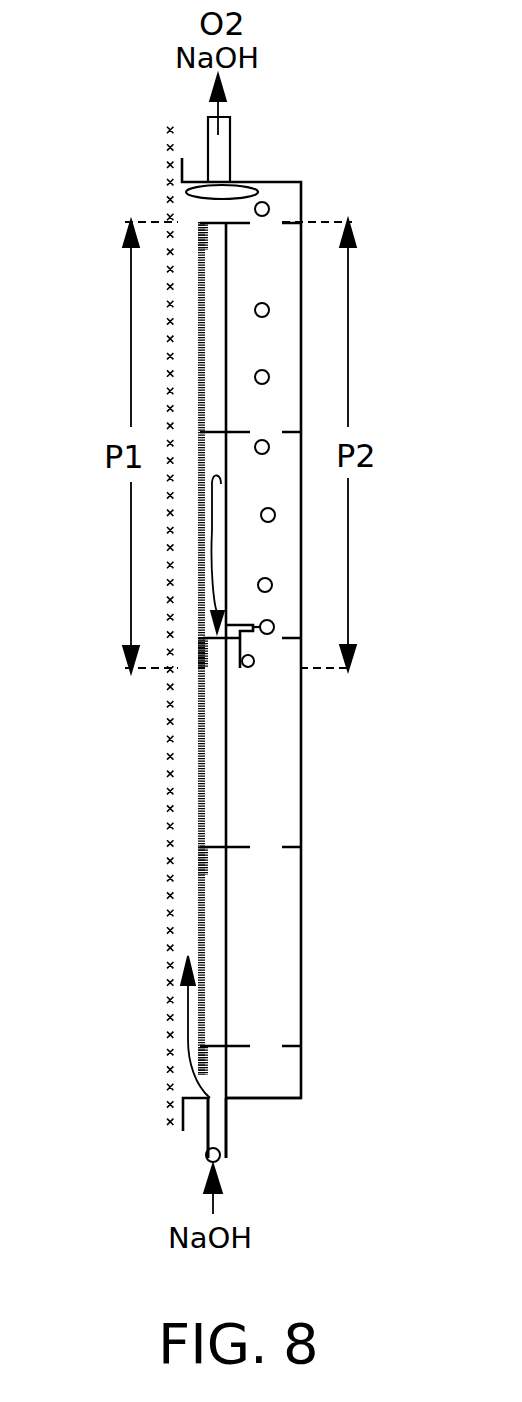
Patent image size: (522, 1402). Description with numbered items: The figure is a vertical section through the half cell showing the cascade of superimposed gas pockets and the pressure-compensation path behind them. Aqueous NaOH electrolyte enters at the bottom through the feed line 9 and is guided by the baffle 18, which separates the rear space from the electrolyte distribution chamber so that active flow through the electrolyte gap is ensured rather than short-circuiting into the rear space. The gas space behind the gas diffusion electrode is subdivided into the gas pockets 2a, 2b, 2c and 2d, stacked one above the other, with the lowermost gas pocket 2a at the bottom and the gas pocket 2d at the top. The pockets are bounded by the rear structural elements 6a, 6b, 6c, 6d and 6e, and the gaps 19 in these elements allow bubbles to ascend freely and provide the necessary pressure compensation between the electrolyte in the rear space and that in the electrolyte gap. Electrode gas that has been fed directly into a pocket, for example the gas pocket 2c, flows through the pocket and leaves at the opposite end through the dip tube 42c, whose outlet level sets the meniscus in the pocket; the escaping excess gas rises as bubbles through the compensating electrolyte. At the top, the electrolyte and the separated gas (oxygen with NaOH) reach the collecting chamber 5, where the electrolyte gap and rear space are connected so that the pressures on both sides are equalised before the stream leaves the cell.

The collecting chamber 5 is at (275, 192).
The rear structural element 6e is at (293, 220).
The rear structural element 6d is at (300, 432).
The rear structural element 6c is at (282, 638).
The rear structural element 6b is at (243, 847).
The rear structural element 6a is at (250, 1046).
The gas pocket 2d is at (213, 343).
The gas pocket 2c is at (218, 533).
The gas pocket 2b is at (215, 750).
The gas pocket 2a is at (217, 898).
The dip tube 42c is at (275, 625).
The gaps 19 is at (266, 636).
The baffle 18 is at (227, 1079).
The feed line 9 is at (205, 1135).